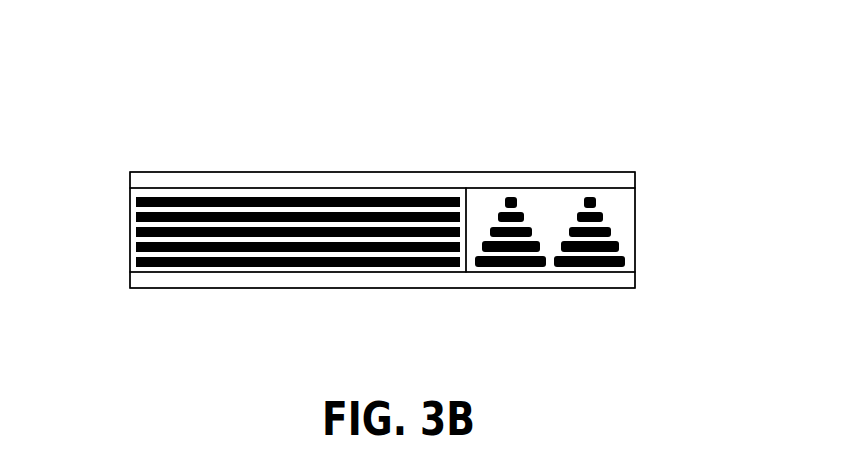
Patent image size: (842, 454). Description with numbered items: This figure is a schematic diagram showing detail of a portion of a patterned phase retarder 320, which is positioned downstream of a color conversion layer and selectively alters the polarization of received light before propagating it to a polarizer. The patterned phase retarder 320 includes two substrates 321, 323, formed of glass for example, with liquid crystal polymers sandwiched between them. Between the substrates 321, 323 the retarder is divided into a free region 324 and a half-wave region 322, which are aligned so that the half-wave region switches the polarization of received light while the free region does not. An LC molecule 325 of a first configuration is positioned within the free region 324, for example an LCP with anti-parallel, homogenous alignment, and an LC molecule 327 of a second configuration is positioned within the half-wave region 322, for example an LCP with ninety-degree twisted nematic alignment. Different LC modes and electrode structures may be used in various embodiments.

The patterned phase retarder 320 is at (128, 106).
The substrate 321 is at (637, 280).
The half-wave region 322 is at (535, 148).
The substrate 323 is at (638, 180).
The free region 324 is at (315, 146).
The LC molecule of a first configuration 325 is at (128, 212).
The LC molecule of a second configuration 327 is at (517, 270).